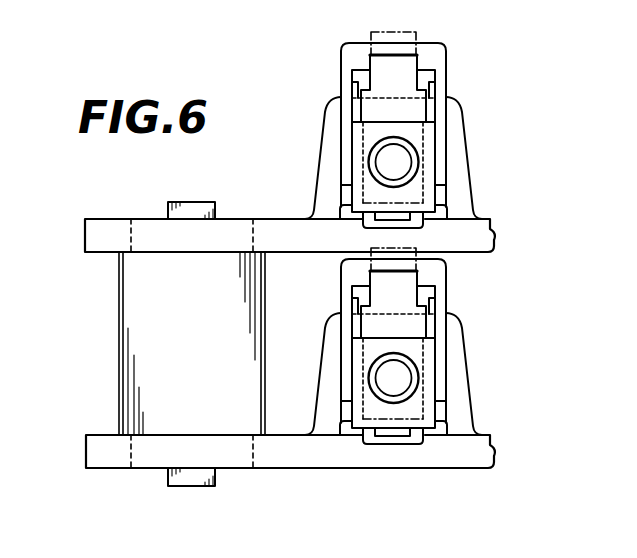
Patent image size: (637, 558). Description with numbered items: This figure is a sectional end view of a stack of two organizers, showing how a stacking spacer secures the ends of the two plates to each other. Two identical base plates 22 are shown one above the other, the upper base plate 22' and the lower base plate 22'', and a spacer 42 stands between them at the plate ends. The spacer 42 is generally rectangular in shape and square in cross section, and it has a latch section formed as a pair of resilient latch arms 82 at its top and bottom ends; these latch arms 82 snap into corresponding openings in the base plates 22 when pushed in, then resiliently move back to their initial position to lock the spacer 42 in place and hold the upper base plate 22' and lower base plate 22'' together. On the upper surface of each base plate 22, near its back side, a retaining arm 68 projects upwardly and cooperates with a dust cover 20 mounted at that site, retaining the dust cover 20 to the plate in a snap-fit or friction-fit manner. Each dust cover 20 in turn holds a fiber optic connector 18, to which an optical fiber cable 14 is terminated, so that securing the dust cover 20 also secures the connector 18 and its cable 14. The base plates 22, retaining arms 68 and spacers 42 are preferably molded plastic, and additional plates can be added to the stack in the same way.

The optical fiber cable 14 is at (403, 165).
The fiber optic connector 18 is at (343, 132).
The dust cover 20 is at (347, 52).
The base plate 22 is at (293, 326).
The upper base plate 22' is at (270, 207).
The lower base plate 22'' is at (332, 444).
The spacer 42 is at (123, 315).
The retaining arm 68 is at (455, 122).
The latch arm 82 is at (204, 205).